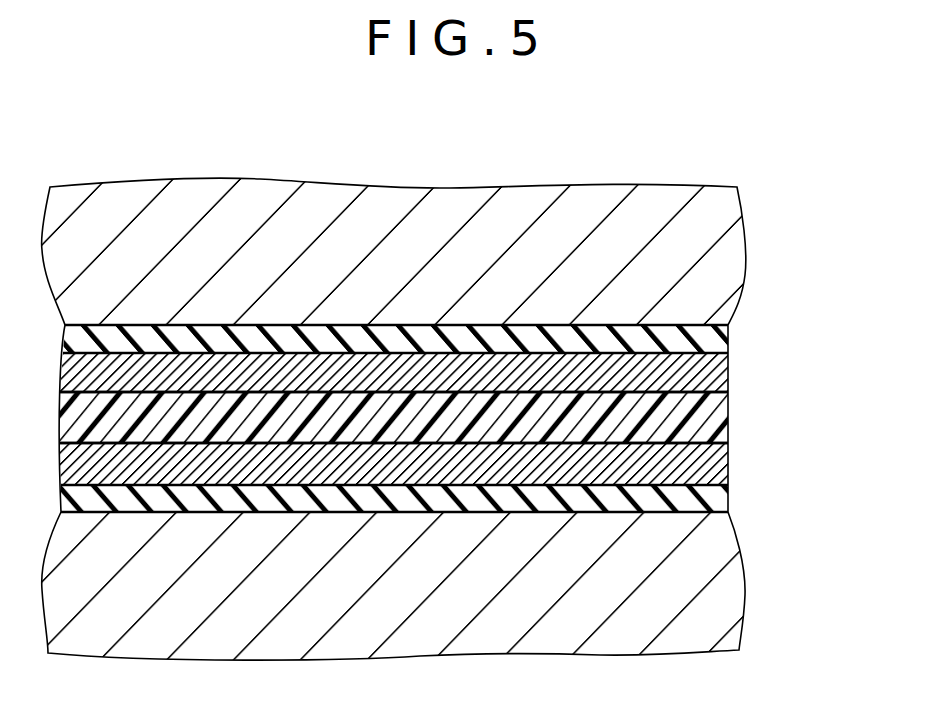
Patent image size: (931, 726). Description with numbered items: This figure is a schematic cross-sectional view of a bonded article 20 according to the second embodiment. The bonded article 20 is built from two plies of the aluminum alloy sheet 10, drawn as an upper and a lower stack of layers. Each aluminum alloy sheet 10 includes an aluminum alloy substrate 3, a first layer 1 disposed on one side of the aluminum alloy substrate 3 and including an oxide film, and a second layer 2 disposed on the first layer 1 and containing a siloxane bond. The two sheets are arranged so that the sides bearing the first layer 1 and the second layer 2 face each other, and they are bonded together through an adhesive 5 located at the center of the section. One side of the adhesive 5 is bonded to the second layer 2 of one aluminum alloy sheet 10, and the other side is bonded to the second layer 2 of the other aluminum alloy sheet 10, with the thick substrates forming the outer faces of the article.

The bonded article 20 is at (581, 146).
The aluminum alloy sheet 10 is at (810, 277).
The aluminum alloy substrate 3 is at (705, 297).
The first layer 1 is at (703, 334).
The second layer 2 is at (703, 370).
The adhesive 5 is at (705, 414).